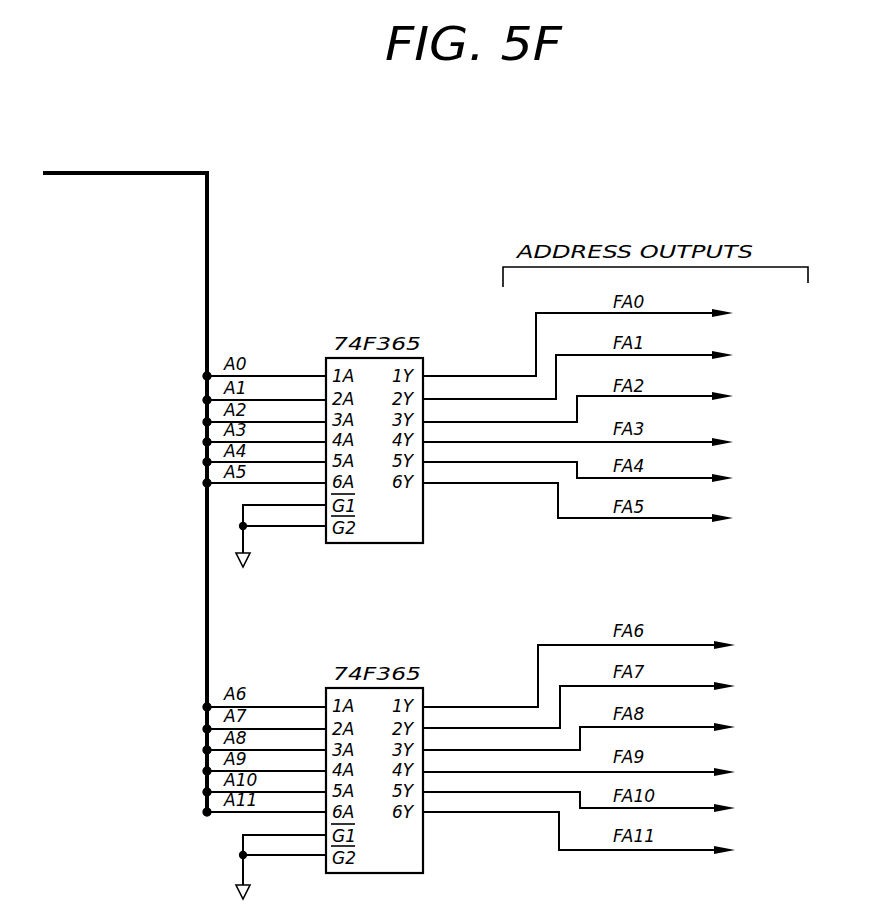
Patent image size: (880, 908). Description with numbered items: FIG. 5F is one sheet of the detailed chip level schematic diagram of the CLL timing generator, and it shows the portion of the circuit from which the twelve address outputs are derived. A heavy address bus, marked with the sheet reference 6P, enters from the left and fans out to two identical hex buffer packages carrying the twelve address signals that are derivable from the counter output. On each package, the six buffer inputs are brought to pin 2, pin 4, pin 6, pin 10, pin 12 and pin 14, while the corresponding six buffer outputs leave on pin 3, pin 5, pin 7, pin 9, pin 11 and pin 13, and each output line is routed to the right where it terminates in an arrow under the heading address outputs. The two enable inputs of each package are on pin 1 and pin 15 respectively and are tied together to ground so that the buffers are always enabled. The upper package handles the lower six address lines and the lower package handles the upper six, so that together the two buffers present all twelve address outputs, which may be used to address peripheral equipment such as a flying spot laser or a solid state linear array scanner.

The address bus from sheet 6P is at (125, 475).
The pin 1 (G1 enable) 1 is at (284, 683).
The pin 2 (1A input) 2 is at (264, 532).
The pin 3 (1Y output) 3 is at (570, 510).
The pin 4 (2A input) 4 is at (264, 555).
The pin 5 (2Y output) 5 is at (570, 541).
The pin 6 (3A input) 6 is at (264, 577).
The pin 7 (3Y output) 7 is at (570, 573).
The pin 9 (4Y output) 9 is at (570, 597).
The pin 10 (4A input) 10 is at (264, 597).
The pin 11 (5Y output) 11 is at (570, 625).
The pin 12 (5A input) 12 is at (264, 618).
The pin 13 (6Y output) 13 is at (570, 666).
The pin 14 (6A input) 14 is at (264, 639).
The pin 15 (G2 enable) 15 is at (283, 692).